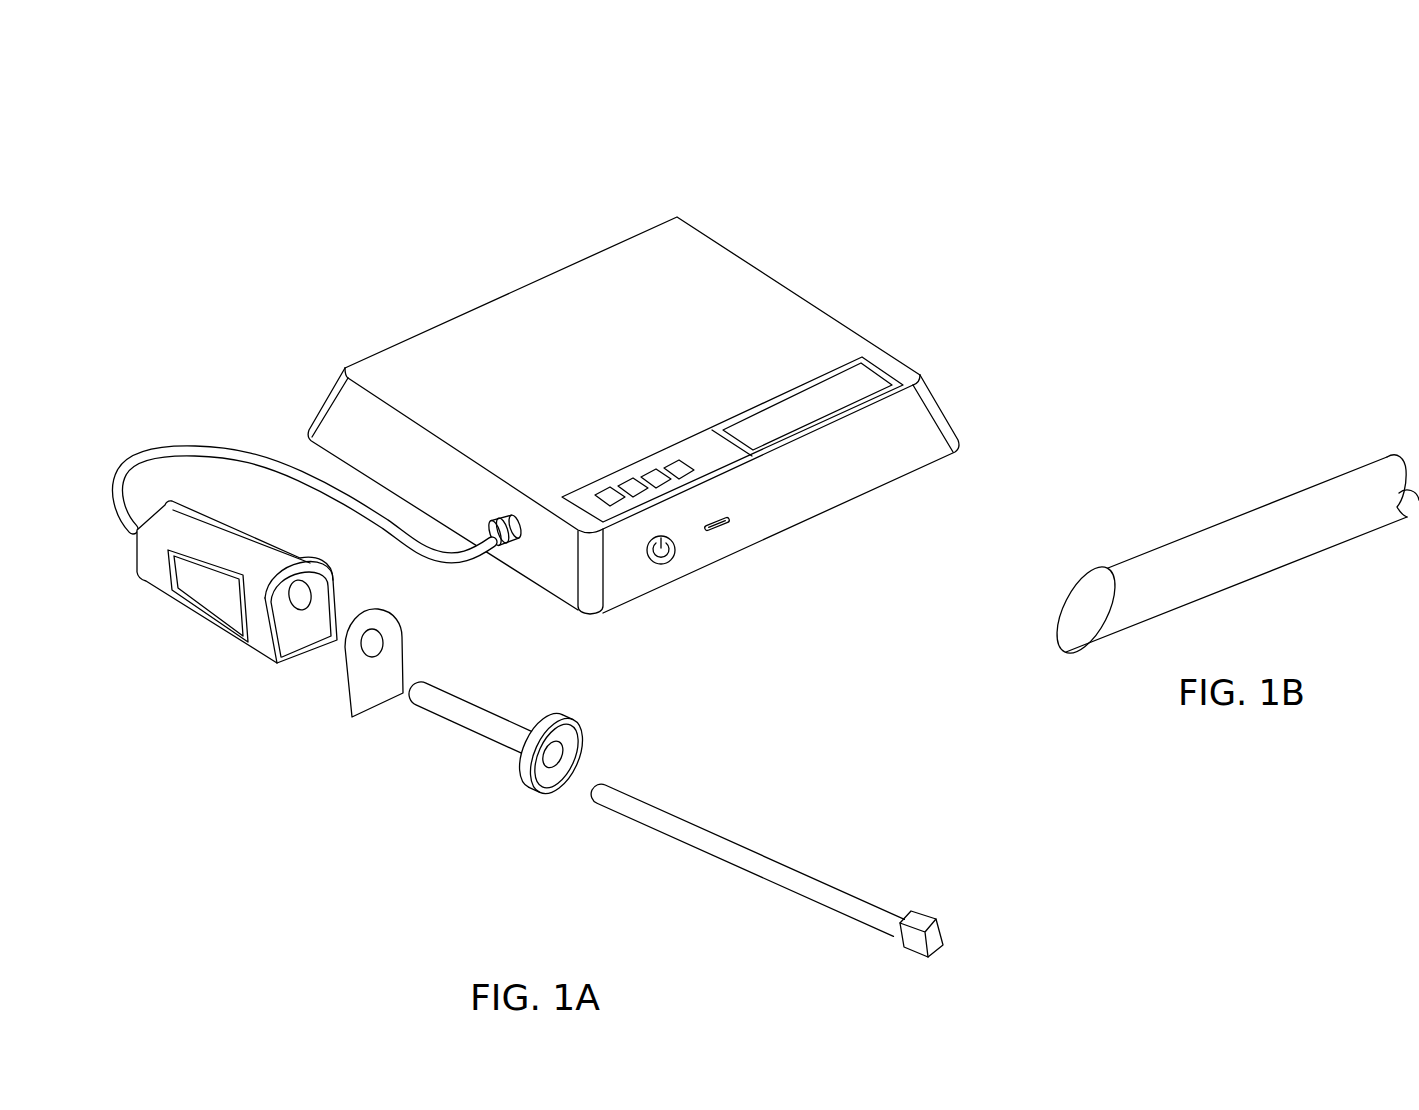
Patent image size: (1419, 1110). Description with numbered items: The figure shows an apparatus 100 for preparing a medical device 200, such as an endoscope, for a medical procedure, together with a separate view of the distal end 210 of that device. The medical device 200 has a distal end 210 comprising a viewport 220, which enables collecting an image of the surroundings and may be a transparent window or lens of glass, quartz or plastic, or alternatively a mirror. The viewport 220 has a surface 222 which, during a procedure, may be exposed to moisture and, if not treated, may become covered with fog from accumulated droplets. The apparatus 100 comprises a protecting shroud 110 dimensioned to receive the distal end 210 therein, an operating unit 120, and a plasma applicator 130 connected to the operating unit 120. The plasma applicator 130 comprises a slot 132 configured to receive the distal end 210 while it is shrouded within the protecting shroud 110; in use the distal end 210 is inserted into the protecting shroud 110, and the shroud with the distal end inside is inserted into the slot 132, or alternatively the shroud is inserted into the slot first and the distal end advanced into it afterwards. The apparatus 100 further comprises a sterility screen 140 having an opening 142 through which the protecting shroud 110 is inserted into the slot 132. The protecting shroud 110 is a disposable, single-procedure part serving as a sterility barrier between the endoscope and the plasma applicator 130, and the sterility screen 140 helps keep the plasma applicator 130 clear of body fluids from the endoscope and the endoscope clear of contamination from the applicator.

In FIG. 1A, the apparatus 100 is at (256, 197).
In FIG. 1A, the protecting shroud 110 is at (476, 740).
In FIG. 1A, the operating unit 120 is at (772, 273).
In FIG. 1A, the plasma applicator 130 is at (150, 582).
In FIG. 1A, the slot 132 is at (305, 593).
In FIG. 1A, the sterility screen 140 is at (383, 707).
In FIG. 1A, the opening 142 is at (368, 650).
In FIG. 1A, the medical device 200 is at (830, 878).
In FIG. 1B, the medical device 200 is at (1358, 464).
In FIG. 1A, the distal end 210 is at (588, 781).
In FIG. 1B, the distal end 210 is at (1064, 653).
In FIG. 1B, the viewport 220 is at (1083, 598).
In FIG. 1B, the surface 222 is at (1080, 607).